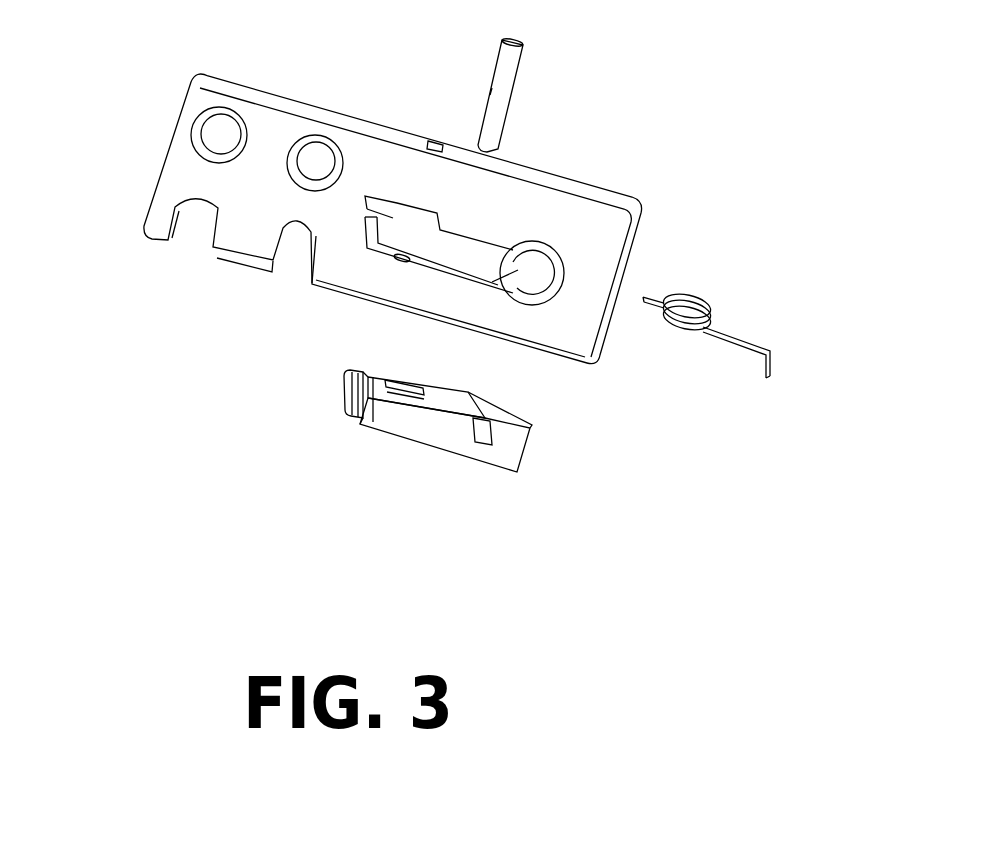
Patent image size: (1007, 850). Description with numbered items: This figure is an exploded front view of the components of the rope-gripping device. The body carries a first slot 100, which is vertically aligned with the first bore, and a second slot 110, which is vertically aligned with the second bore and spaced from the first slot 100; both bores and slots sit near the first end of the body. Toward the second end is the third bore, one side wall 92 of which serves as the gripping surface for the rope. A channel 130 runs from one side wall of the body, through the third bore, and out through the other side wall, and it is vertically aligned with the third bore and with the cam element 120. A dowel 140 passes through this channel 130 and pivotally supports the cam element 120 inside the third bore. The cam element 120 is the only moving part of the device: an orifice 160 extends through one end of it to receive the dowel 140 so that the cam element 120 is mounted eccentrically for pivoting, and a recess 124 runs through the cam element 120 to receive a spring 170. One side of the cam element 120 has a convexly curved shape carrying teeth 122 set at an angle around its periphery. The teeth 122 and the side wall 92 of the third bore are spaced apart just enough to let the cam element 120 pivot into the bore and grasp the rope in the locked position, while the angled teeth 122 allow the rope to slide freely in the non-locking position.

The side wall of the third bore 92 is at (483, 288).
The first slot 100 is at (290, 252).
The second slot 110 is at (199, 232).
The cam element 120 is at (402, 423).
The teeth 122 is at (535, 422).
The recess 124 is at (484, 430).
The channel 130 is at (428, 150).
The dowel 140 is at (506, 70).
The orifice 160 is at (393, 393).
The spring 170 is at (692, 328).